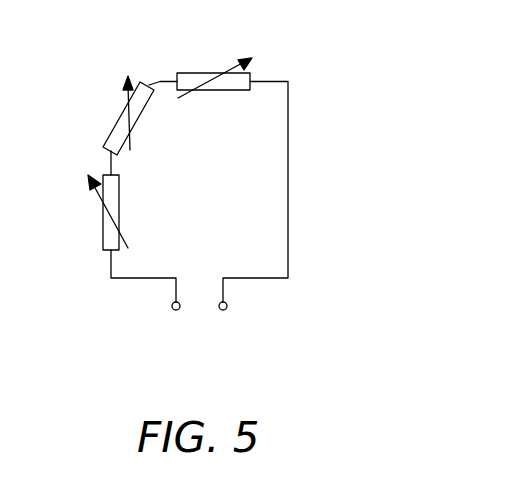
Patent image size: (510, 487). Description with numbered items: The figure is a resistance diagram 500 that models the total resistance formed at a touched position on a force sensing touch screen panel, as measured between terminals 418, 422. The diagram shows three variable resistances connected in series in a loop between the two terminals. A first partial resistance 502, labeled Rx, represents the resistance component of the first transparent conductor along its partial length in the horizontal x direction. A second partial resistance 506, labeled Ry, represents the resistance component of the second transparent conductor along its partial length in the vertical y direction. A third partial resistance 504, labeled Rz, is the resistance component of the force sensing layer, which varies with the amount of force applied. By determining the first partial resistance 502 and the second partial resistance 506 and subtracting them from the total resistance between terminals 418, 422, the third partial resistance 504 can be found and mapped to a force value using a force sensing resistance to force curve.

The resistance diagram 500 is at (398, 354).
The first partial resistance 502 is at (202, 73).
The third partial resistance 504 is at (110, 134).
The second partial resistance 506 is at (103, 230).
The terminal 422 is at (177, 311).
The terminal 418 is at (224, 311).